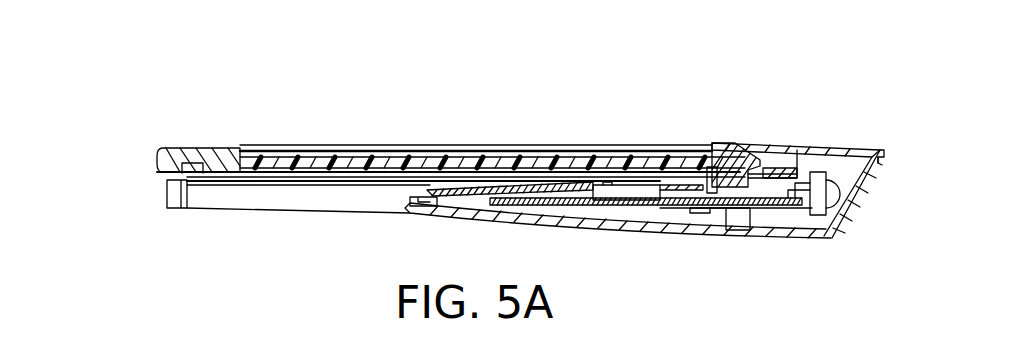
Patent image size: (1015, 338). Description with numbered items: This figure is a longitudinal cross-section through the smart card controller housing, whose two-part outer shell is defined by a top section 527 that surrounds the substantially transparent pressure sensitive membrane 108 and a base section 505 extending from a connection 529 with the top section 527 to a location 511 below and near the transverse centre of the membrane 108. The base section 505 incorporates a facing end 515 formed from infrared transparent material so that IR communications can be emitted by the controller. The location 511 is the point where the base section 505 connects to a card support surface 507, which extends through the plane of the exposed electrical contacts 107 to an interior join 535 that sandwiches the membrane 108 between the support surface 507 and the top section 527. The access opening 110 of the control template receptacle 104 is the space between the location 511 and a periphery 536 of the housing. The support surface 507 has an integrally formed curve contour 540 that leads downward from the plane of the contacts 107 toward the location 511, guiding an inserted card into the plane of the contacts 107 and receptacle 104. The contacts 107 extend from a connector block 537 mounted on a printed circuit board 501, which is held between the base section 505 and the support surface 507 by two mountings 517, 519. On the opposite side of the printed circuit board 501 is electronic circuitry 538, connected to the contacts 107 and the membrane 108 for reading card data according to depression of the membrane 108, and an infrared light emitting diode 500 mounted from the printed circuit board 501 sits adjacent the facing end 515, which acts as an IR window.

The infrared light emitting diode 500 is at (872, 150).
The pressure sensitive membrane 108 is at (422, 152).
The control template receptacle 104 is at (517, 176).
The curve contour 540 is at (423, 188).
The card support surface 507 is at (605, 182).
The electrical contacts 107 is at (650, 177).
The connector block 537 is at (758, 166).
The interior join 535 is at (826, 147).
The facing end 515 is at (863, 195).
The connection 529 is at (887, 162).
The top section 527 is at (840, 172).
The periphery 536 is at (168, 214).
The access opening 110 is at (297, 195).
The location 511 is at (405, 206).
The mounting 517 is at (510, 209).
The base section 505 is at (607, 233).
The printed circuit board 501 is at (687, 209).
The electronic circuitry 538 is at (698, 208).
The mounting 519 is at (740, 218).